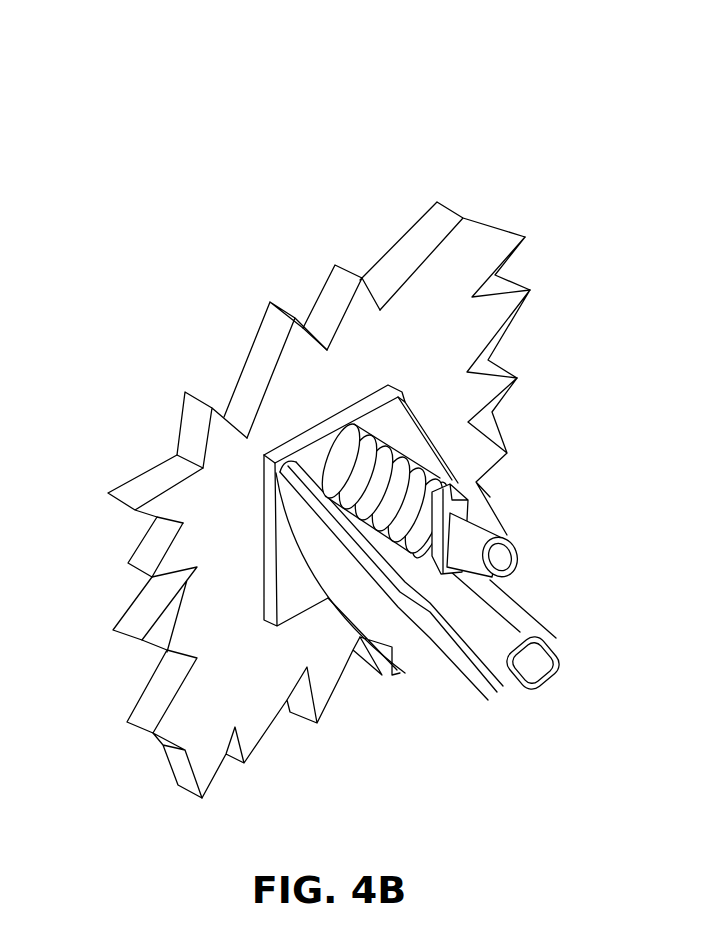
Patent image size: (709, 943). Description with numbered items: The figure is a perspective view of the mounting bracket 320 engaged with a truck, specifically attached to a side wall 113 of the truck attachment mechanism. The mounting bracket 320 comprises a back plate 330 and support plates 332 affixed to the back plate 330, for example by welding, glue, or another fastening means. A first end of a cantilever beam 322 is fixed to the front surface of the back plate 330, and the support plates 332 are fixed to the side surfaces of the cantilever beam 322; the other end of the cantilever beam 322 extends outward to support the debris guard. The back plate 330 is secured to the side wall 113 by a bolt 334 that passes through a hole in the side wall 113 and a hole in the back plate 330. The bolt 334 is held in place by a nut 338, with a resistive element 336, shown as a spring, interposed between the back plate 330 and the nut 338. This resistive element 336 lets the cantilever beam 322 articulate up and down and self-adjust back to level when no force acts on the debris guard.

The mounting bracket 320 is at (147, 150).
The side wall 113 is at (470, 248).
The back plate 330 is at (290, 587).
The support plate 332 is at (430, 653).
The cantilever beam 322 is at (548, 657).
The resistive element 336 is at (415, 468).
The nut 338 is at (455, 503).
The bolt 334 is at (498, 561).